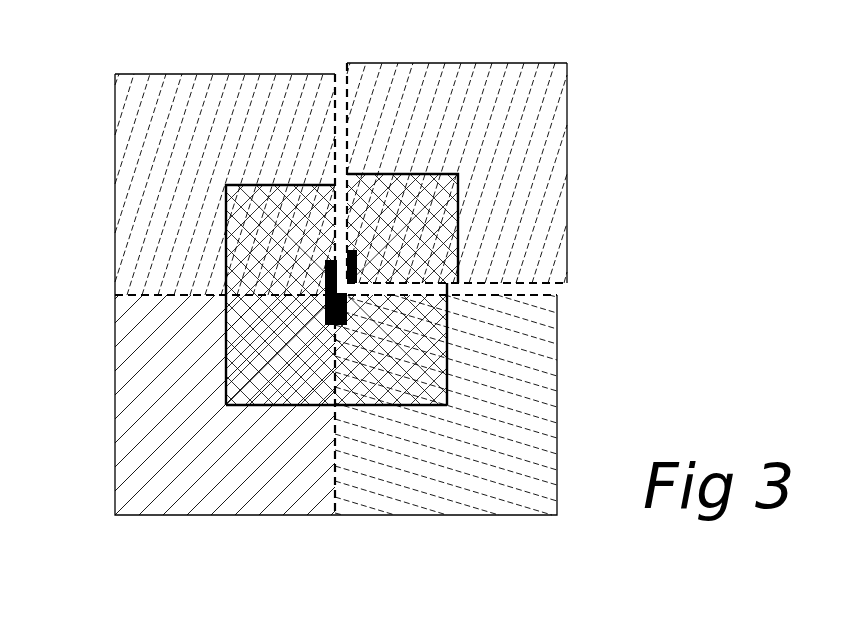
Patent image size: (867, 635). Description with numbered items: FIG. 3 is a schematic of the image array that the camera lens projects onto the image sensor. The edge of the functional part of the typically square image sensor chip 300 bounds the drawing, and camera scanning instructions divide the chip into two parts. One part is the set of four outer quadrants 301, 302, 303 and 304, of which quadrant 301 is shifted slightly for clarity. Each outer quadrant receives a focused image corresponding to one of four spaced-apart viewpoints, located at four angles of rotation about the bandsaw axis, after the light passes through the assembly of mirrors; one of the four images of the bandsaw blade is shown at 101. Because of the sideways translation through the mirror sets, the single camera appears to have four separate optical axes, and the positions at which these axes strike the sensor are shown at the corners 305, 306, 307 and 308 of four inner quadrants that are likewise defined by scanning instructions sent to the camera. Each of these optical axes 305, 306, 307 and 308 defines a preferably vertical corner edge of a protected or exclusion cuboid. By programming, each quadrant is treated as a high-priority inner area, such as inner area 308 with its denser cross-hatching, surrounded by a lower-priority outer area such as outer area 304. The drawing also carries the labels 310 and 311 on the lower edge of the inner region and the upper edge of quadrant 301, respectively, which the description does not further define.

The edge of the functional part of the image sensor chip 300 is at (248, 74).
The outer quadrant 301 is at (497, 62).
The outer quadrant 302 is at (480, 515).
The outer quadrant 303 is at (203, 515).
The lower-priority outer area 304 is at (130, 117).
The optical axis corner 305 is at (458, 175).
The optical axis corner 306 is at (447, 405).
The optical axis corner 307 is at (226, 405).
The high-priority inner area 308 is at (226, 185).
The edge of central region 310 is at (293, 405).
The tile edge 311 is at (440, 62).
The image of the bandsaw blade 101 is at (357, 283).